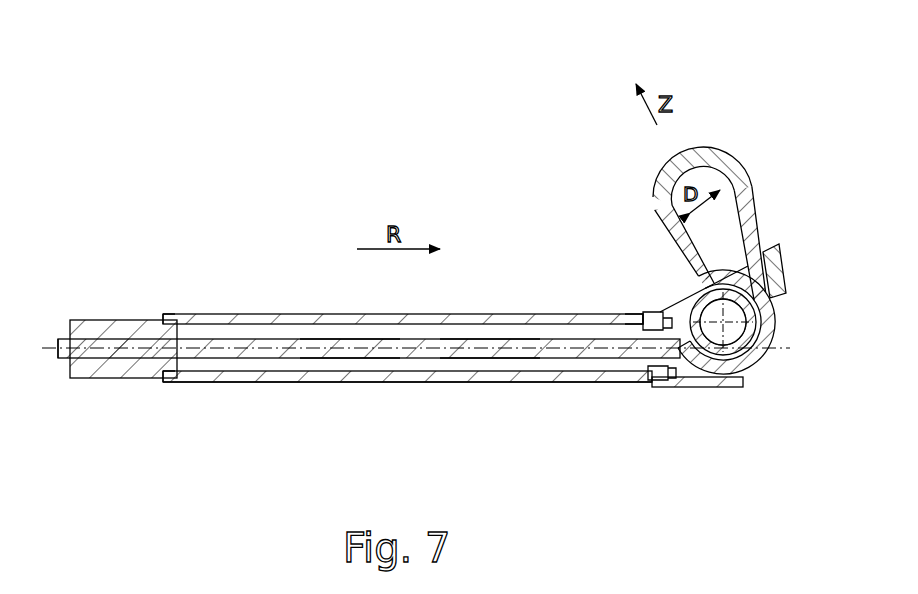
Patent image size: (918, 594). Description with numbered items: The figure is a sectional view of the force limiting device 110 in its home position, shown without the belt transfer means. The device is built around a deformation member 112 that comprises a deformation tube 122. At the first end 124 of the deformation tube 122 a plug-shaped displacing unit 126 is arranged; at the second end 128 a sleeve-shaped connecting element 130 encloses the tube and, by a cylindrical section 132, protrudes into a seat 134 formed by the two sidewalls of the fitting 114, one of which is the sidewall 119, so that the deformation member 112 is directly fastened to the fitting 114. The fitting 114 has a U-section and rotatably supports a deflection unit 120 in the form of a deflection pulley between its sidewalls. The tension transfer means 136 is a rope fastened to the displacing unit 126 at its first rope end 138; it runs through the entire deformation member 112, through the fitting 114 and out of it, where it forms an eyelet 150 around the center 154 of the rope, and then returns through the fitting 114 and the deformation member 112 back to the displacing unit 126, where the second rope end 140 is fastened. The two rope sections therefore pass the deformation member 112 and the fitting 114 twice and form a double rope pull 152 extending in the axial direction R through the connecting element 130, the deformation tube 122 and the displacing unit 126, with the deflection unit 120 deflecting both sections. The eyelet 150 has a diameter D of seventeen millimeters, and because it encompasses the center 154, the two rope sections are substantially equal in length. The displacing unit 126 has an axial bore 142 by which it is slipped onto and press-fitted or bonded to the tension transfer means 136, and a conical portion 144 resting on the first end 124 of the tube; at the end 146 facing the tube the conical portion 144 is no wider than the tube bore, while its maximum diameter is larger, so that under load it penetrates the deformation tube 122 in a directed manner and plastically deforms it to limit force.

The force limiting device 110 is at (306, 94).
The deformation member 112 is at (531, 388).
The fitting 114 is at (785, 261).
The sidewall 119 is at (697, 318).
The deflection unit 120 is at (768, 352).
The deformation tube 122 is at (397, 384).
The first end of the deformation tube 124 is at (181, 314).
The displacing unit 126 is at (118, 379).
The second end of the deformation tube 128 is at (633, 315).
The connecting element 130 is at (647, 382).
The cylindrical section 132 is at (652, 313).
The seat 134 is at (666, 390).
The tension transfer means 136 is at (347, 360).
The first rope end 138 is at (58, 360).
The second rope end 140 is at (46, 345).
The axial bore 142 is at (135, 320).
The conical portion 144 is at (165, 316).
The end of the displacing unit 146 is at (193, 384).
The eyelet 150 is at (739, 252).
The double rope pull 152 is at (487, 362).
The center of the tension transfer means 154 is at (688, 158).